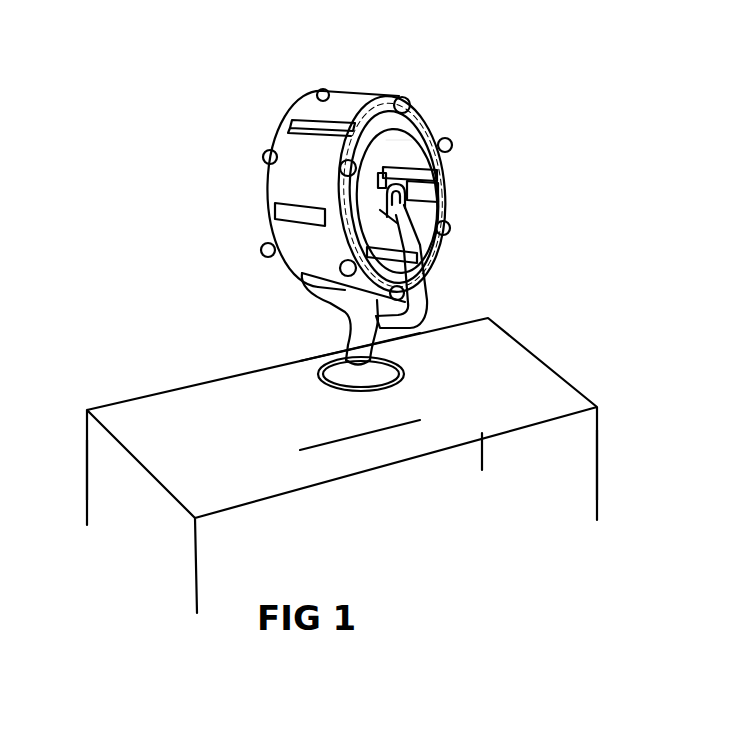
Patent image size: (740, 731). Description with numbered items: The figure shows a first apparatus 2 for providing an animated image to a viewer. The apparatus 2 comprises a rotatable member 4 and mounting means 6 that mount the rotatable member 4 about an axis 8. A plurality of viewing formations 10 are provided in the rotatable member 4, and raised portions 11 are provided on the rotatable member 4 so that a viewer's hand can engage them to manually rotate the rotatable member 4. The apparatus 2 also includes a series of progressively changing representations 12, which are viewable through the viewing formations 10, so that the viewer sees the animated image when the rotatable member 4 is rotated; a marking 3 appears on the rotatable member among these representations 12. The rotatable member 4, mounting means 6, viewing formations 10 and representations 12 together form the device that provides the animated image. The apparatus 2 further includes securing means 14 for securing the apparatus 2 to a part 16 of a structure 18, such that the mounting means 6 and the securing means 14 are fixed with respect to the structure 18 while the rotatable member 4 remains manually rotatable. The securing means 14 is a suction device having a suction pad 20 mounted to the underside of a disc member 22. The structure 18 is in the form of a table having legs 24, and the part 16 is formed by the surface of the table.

The first apparatus 2 is at (453, 70).
The indicator 3 is at (399, 151).
The rotatable member 4 is at (273, 227).
The mounting means 6 is at (421, 267).
The axis 8 is at (398, 203).
The viewing formations 10 is at (268, 185).
The raised portions 11 is at (347, 268).
The progressively changing representations 12 is at (428, 202).
The securing means 14 is at (402, 400).
The part 16 is at (513, 379).
The structure 18 is at (593, 368).
The suction pad 20 is at (340, 391).
The disc member 22 is at (313, 362).
The legs 24 is at (182, 578).